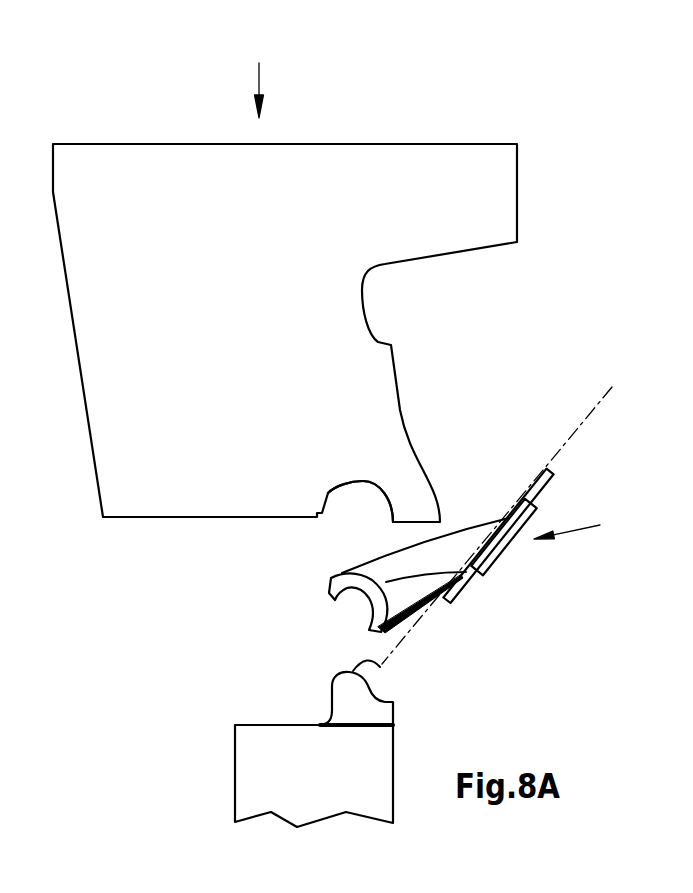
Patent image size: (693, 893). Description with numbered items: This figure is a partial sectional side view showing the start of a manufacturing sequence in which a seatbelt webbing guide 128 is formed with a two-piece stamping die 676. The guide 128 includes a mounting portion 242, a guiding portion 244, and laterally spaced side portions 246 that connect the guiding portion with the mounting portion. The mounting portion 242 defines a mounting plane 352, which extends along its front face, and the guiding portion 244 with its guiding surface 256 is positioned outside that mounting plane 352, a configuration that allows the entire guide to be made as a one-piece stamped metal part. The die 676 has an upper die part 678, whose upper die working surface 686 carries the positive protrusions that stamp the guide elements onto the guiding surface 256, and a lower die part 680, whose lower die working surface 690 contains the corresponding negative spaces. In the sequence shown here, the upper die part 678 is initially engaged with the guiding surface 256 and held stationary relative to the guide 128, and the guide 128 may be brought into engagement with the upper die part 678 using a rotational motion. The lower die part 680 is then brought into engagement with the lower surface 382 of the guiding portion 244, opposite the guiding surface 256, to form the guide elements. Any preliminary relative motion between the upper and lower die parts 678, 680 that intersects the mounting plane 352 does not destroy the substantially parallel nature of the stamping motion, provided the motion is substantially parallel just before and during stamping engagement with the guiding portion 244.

The stamping die 676 is at (261, 76).
The upper die part 678 is at (216, 346).
The upper die working surface 686 is at (357, 482).
The lower surface 382 is at (362, 594).
The side portions 246 is at (457, 535).
The guiding portion 244 is at (387, 628).
The mounting portion 242 is at (546, 467).
The guiding surface 256 is at (466, 583).
The mounting plane 352 is at (574, 433).
The guide 128 is at (588, 524).
The lower die working surface 690 is at (380, 667).
The lower die part 680 is at (265, 765).